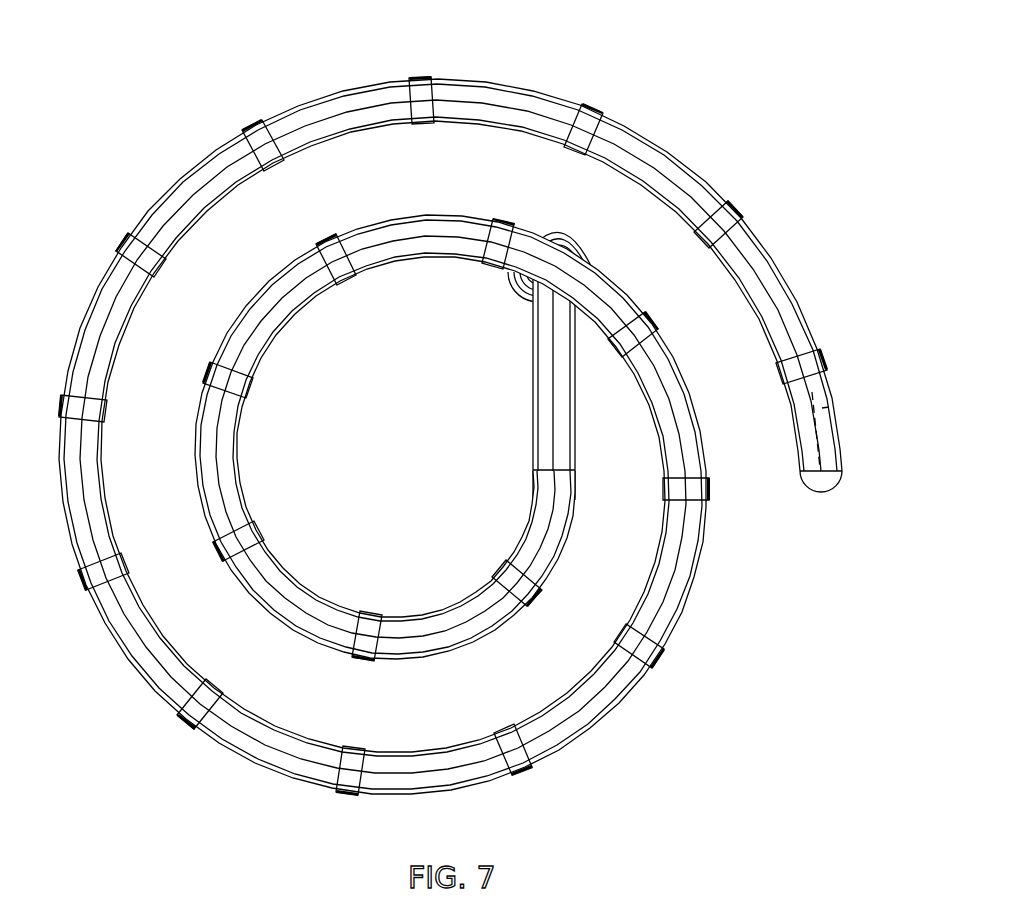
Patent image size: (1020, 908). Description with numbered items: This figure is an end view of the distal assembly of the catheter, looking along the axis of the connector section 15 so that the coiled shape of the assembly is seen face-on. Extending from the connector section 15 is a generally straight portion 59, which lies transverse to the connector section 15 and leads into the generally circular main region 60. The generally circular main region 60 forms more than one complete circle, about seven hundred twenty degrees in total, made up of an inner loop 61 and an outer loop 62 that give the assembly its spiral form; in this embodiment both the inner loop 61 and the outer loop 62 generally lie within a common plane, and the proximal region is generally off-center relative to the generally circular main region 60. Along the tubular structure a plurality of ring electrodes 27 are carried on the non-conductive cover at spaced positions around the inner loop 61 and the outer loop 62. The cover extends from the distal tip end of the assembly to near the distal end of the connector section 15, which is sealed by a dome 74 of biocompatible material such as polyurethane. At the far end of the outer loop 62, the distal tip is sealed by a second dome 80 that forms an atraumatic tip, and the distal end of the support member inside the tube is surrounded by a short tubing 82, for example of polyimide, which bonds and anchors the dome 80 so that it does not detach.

The connector section 15 is at (512, 288).
The ring electrodes 27 is at (422, 77).
The generally straight portion 59 is at (536, 400).
The generally circular main region 60 is at (450, 437).
The inner loop 61 is at (288, 318).
The outer loop 62 is at (210, 190).
The dome 74 is at (522, 305).
The second dome 80 is at (826, 494).
The short tubing 82 is at (838, 436).